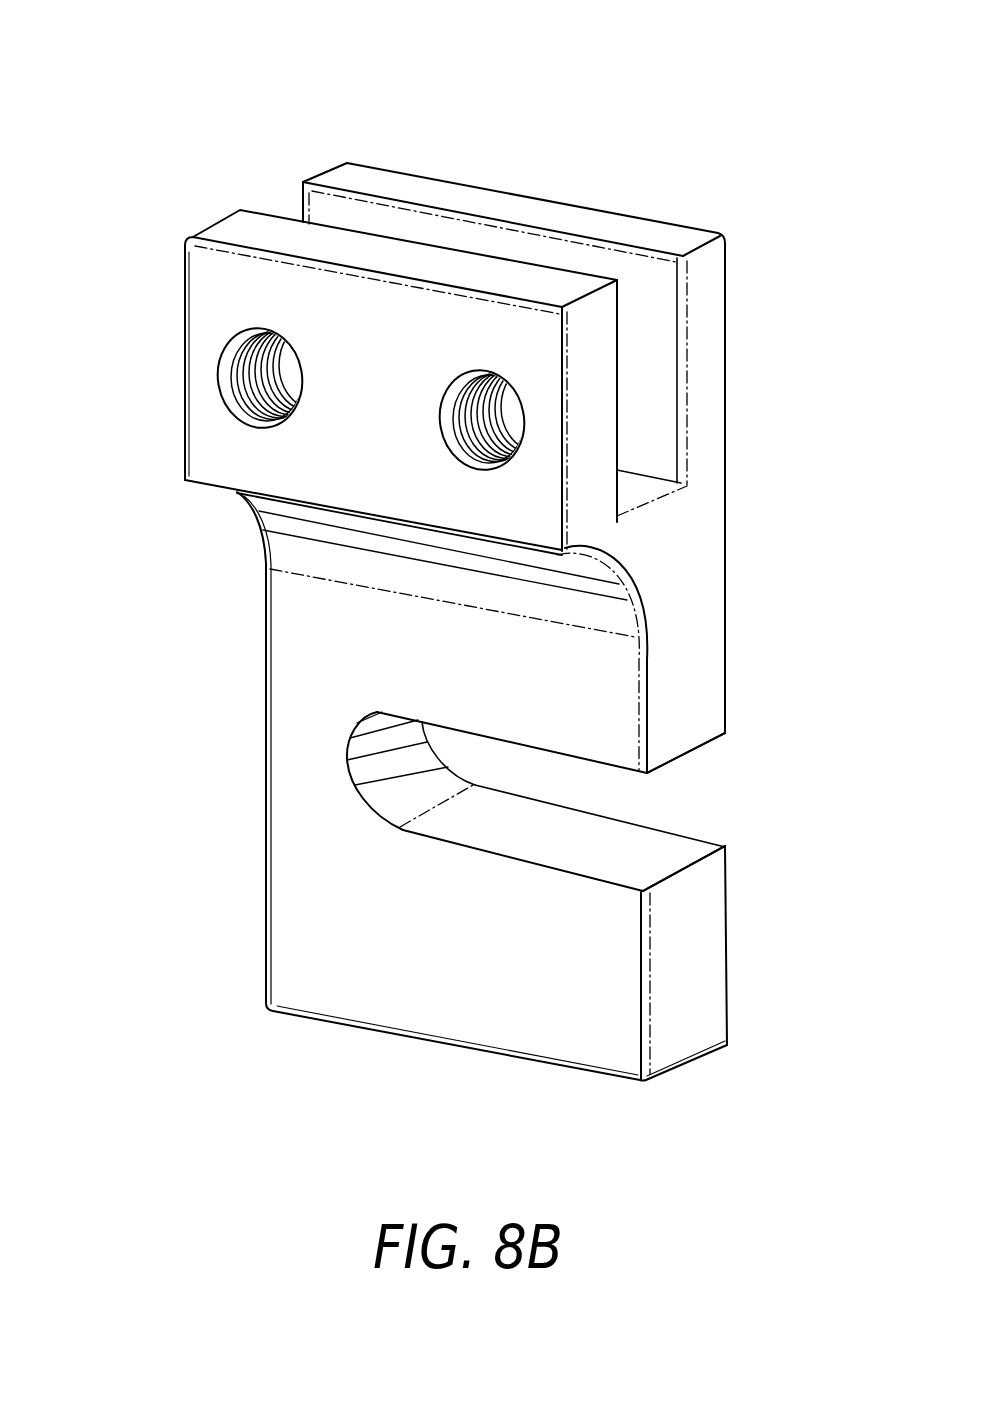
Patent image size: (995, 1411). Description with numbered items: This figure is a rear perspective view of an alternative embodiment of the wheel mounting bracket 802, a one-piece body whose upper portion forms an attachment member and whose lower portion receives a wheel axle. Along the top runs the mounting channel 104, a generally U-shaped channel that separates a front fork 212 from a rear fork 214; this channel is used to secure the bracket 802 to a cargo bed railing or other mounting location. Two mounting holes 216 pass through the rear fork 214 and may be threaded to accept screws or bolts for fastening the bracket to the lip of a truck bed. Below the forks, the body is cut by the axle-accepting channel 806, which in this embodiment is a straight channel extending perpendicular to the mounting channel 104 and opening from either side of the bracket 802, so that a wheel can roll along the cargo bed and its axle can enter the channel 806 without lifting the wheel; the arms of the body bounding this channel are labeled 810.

The wheel mounting bracket 802 is at (117, 128).
The rear fork 214 is at (200, 277).
The front fork 212 is at (716, 273).
The mounting channel 104 is at (644, 428).
The mounting holes 216 is at (461, 466).
The arms of lower body 810 is at (410, 665).
The axle-accepting channel 806 is at (697, 797).